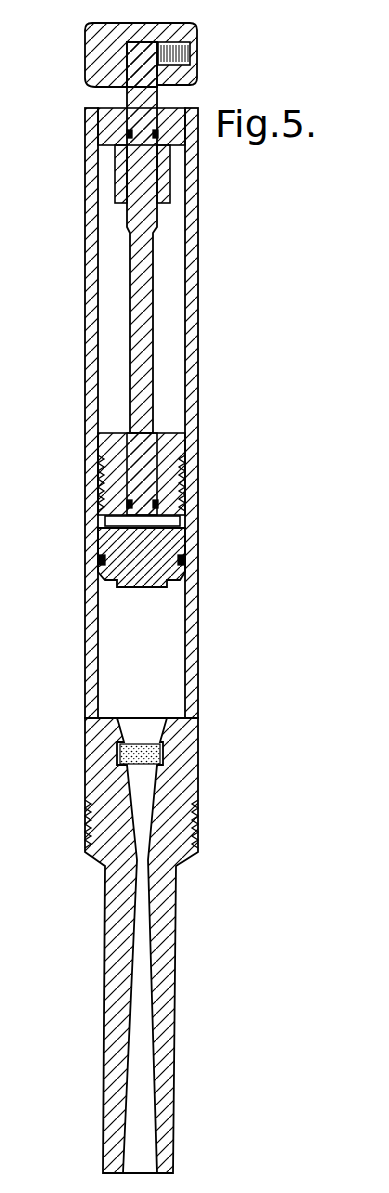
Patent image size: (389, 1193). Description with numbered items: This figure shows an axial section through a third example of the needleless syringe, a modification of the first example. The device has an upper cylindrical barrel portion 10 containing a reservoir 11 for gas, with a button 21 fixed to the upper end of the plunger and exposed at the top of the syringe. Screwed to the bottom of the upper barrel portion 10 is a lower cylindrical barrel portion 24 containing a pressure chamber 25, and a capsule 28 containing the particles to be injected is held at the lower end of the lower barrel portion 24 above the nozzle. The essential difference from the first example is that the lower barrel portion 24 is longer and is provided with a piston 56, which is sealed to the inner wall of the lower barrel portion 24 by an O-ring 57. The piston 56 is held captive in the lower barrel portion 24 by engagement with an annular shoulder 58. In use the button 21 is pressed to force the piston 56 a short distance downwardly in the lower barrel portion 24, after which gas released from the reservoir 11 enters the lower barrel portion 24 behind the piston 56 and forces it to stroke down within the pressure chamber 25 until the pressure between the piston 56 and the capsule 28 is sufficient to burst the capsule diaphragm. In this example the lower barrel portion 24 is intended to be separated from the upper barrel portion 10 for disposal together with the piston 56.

The upper cylindrical barrel portion 10 is at (198, 348).
The reservoir 11 is at (170, 268).
The button 21 is at (178, 33).
The lower cylindrical barrel portion 24 is at (198, 632).
The pressure chamber 25 is at (163, 693).
The capsule 28 is at (96, 764).
The piston 56 is at (183, 533).
The O-ring 57 is at (100, 562).
The annular shoulder 58 is at (100, 523).